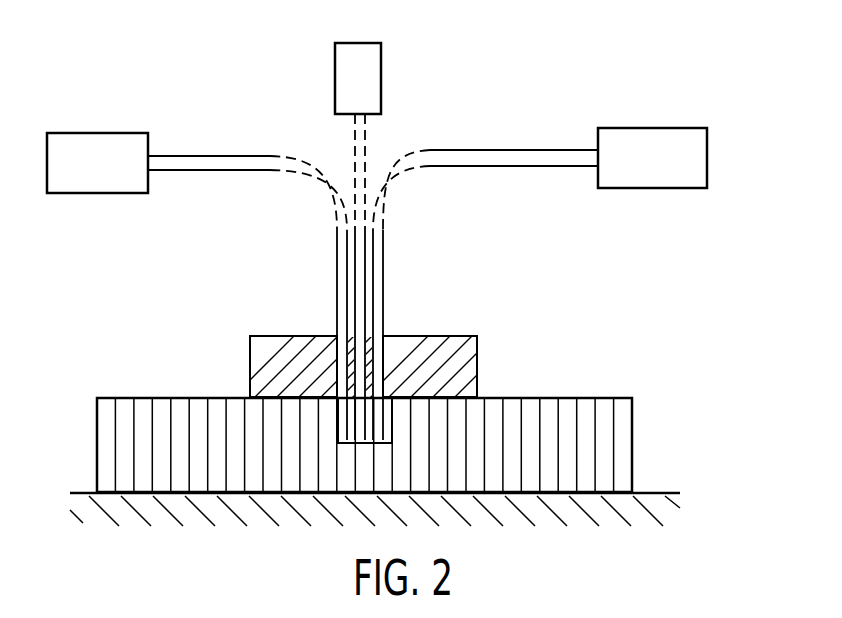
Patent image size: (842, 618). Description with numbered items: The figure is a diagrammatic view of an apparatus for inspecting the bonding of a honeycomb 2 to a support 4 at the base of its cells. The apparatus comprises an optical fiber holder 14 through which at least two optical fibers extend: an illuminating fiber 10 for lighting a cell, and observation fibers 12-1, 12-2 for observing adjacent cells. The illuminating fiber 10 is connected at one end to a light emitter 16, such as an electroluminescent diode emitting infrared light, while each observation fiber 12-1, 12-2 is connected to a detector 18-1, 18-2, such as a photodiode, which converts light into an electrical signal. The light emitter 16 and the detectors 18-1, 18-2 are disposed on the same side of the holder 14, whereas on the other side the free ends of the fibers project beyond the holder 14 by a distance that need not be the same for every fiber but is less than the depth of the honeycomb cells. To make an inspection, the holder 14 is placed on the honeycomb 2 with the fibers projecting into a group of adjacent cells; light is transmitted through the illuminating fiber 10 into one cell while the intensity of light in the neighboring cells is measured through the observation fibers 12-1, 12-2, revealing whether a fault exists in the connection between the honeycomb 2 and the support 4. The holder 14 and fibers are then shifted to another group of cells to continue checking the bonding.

The honeycomb 2 is at (633, 432).
The support 4 is at (618, 505).
The illuminating fiber 10 is at (355, 134).
The observation fiber 12-1 is at (383, 268).
The observation fiber 12-2 is at (337, 266).
The optical fiber holder 14 is at (477, 357).
The light emitter 16 is at (375, 80).
The detector 18-1 is at (628, 140).
The detector 18-2 is at (116, 135).